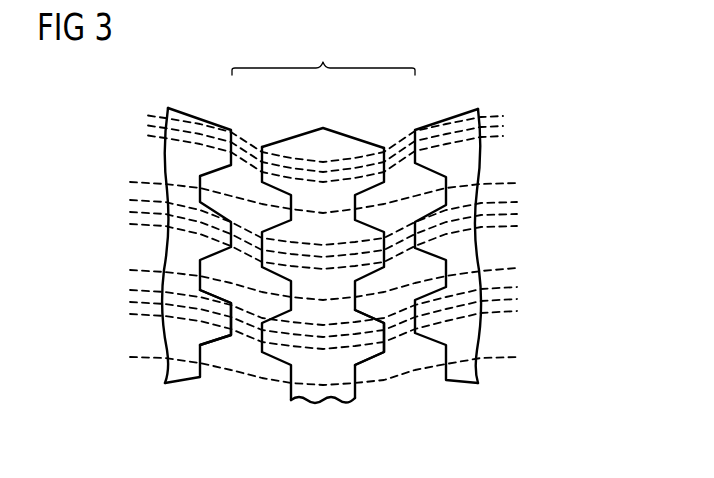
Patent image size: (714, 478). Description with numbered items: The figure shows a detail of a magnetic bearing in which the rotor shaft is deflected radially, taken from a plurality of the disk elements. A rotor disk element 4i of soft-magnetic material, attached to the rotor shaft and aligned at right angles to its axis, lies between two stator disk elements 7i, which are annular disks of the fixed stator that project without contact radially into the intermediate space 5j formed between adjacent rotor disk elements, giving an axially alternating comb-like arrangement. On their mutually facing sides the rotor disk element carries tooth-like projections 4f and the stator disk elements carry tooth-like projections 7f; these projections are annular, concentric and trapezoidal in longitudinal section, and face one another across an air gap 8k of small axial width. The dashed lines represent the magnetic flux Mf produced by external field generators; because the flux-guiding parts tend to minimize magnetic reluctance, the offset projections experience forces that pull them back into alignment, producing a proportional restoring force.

The stator disk element 7i is at (177, 110).
The tooth-like projection of stator disk element 7f is at (230, 312).
The rotor disk element 4i is at (337, 132).
The tooth-like projection of rotor disk element 4f is at (379, 346).
The intermediate space 5j is at (323, 53).
The air gap 8k is at (405, 181).
The magnetic flux Mf is at (513, 184).